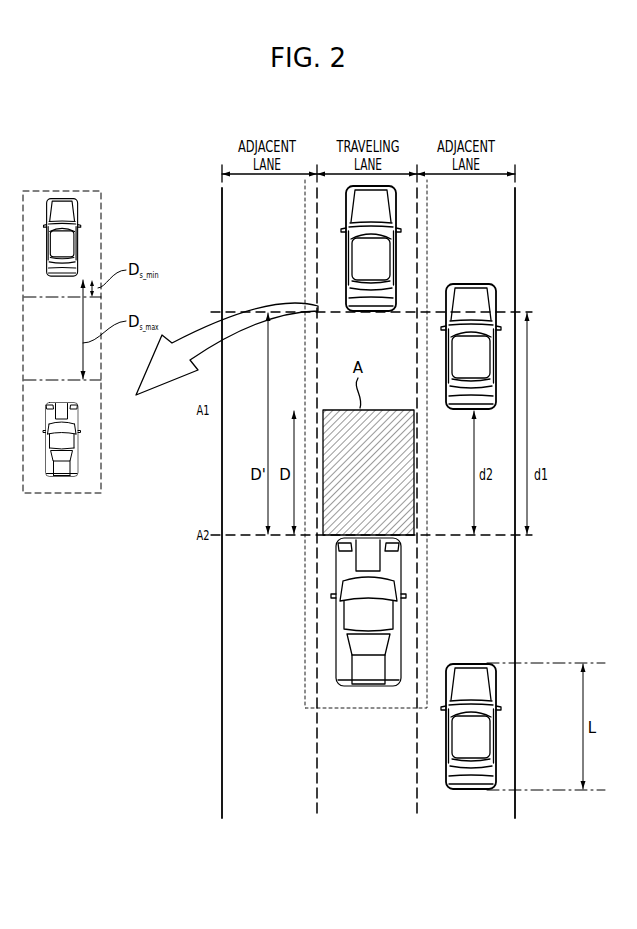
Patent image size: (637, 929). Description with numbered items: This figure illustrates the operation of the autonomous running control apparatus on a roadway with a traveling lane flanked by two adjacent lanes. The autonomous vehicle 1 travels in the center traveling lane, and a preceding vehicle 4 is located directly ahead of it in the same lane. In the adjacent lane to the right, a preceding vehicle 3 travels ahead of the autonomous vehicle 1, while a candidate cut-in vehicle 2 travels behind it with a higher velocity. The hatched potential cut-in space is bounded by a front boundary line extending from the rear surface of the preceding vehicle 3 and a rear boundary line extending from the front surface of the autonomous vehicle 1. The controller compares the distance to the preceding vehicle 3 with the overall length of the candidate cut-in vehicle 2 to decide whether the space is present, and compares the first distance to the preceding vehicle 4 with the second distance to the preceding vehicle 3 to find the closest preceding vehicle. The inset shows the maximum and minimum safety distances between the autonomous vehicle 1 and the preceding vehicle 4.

The autonomous vehicle 1 is at (334, 618).
The candidate cut-in vehicle 2 is at (499, 740).
The preceding vehicle 3 is at (498, 352).
The preceding vehicle 4 is at (398, 240).